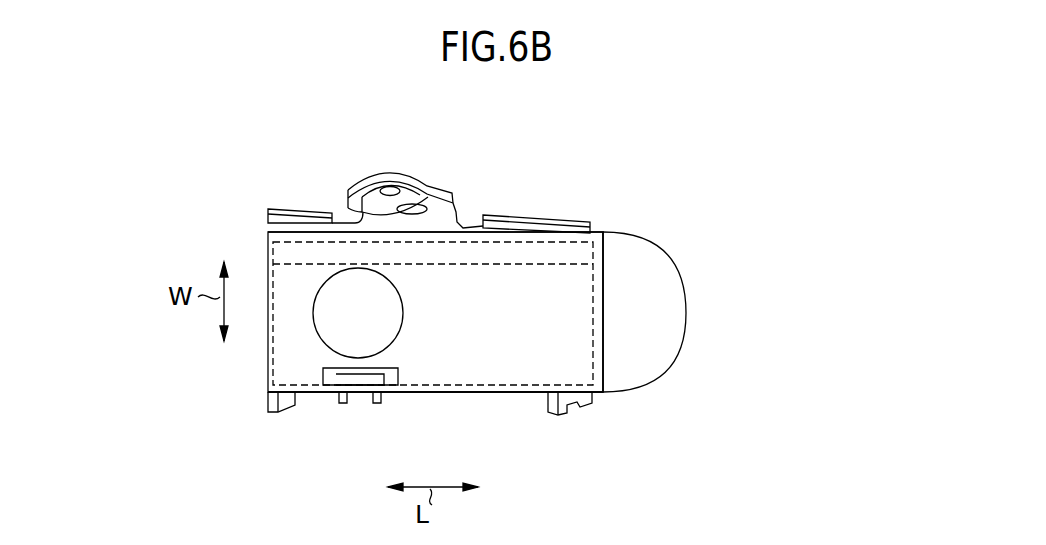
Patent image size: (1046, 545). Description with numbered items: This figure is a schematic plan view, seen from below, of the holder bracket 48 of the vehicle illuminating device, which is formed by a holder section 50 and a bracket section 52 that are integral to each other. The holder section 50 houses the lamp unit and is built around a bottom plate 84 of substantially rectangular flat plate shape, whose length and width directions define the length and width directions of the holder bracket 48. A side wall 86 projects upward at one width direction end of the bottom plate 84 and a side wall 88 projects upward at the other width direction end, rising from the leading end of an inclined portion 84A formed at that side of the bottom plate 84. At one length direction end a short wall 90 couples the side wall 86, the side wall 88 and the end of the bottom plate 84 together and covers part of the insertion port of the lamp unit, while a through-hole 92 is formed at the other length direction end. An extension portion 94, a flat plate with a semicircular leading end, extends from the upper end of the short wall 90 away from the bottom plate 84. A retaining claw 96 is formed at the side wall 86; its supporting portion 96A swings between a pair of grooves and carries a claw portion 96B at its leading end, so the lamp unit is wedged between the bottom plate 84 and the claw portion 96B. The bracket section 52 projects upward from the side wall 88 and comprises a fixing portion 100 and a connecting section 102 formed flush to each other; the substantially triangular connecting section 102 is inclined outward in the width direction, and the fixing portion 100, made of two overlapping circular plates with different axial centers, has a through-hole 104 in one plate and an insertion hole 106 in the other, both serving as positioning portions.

The holder bracket 48 is at (698, 175).
The holder section 50 is at (609, 407).
The bracket section 52 is at (415, 164).
The bottom plate 84 is at (580, 299).
The inclined portion 84A is at (568, 252).
The side wall 86 is at (520, 396).
The side wall 88 is at (460, 228).
The short wall 90 is at (603, 332).
The through-hole 92 is at (408, 313).
The extension portion 94 is at (677, 315).
The retaining claw 96 is at (410, 420).
The supporting portion 96A is at (357, 393).
The claw portion 96B is at (366, 385).
The fixing portion 100 is at (389, 168).
The connecting section 102 is at (438, 227).
The through-hole 104 is at (379, 182).
The insertion hole 106 is at (360, 203).